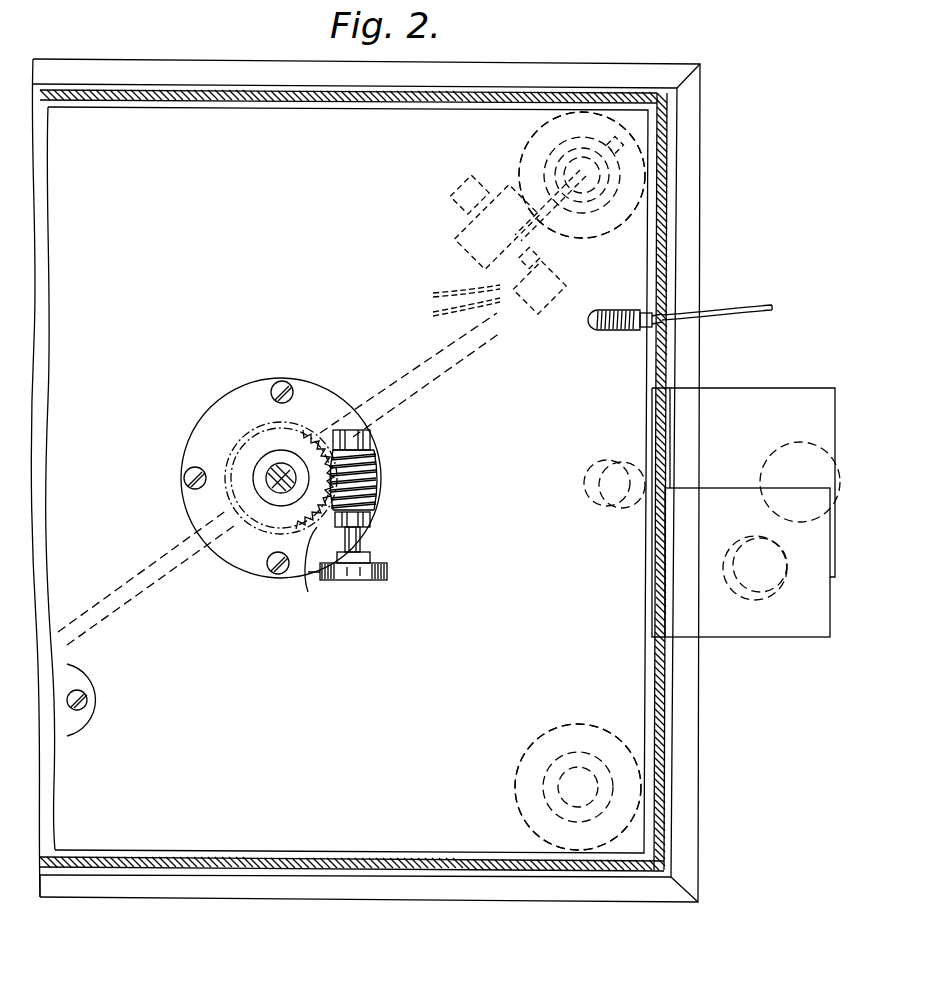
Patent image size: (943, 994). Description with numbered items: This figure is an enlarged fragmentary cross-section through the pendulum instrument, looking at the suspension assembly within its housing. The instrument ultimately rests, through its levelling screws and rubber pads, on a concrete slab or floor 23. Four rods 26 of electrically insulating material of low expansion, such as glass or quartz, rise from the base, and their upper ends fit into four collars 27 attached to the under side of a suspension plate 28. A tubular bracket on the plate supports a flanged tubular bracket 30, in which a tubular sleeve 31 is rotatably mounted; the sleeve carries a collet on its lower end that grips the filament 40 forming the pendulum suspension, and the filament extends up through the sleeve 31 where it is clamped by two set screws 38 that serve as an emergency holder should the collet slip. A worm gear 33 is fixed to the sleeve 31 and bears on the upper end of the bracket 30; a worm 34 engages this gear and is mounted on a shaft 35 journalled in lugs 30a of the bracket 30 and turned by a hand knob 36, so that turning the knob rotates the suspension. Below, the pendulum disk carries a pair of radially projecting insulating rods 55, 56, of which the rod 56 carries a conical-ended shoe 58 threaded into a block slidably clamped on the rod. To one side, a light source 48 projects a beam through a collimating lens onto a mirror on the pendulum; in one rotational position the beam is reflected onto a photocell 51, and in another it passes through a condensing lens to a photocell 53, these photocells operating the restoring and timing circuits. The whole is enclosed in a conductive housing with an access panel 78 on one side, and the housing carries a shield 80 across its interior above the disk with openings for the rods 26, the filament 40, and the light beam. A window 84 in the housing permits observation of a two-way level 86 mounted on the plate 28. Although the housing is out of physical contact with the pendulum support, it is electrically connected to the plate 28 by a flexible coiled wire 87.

The concrete slab or floor 23 is at (432, 900).
The rods 26 is at (568, 170).
The collars 27 is at (606, 212).
The suspension plate 28 is at (268, 747).
The flanged tubular bracket 30 is at (242, 557).
The lugs 30a is at (372, 436).
The tubular sleeve 31 is at (267, 478).
The worm gear 33 is at (309, 585).
The worm 34 is at (378, 472).
The shaft 35 is at (358, 542).
The hand knob 36 is at (367, 581).
The set screws 38 is at (300, 527).
The filament 40 is at (282, 468).
The light source 48 is at (800, 443).
The photocell 51 is at (598, 503).
The photocell 53 is at (727, 590).
The rod 55 is at (108, 597).
The rod 56 is at (410, 380).
The shoe 58 is at (545, 312).
The access panel 78 is at (280, 102).
The shield 80 is at (153, 853).
The window 84 is at (652, 560).
The two-way level 86 is at (82, 723).
The flexible coiled wire 87 is at (610, 331).